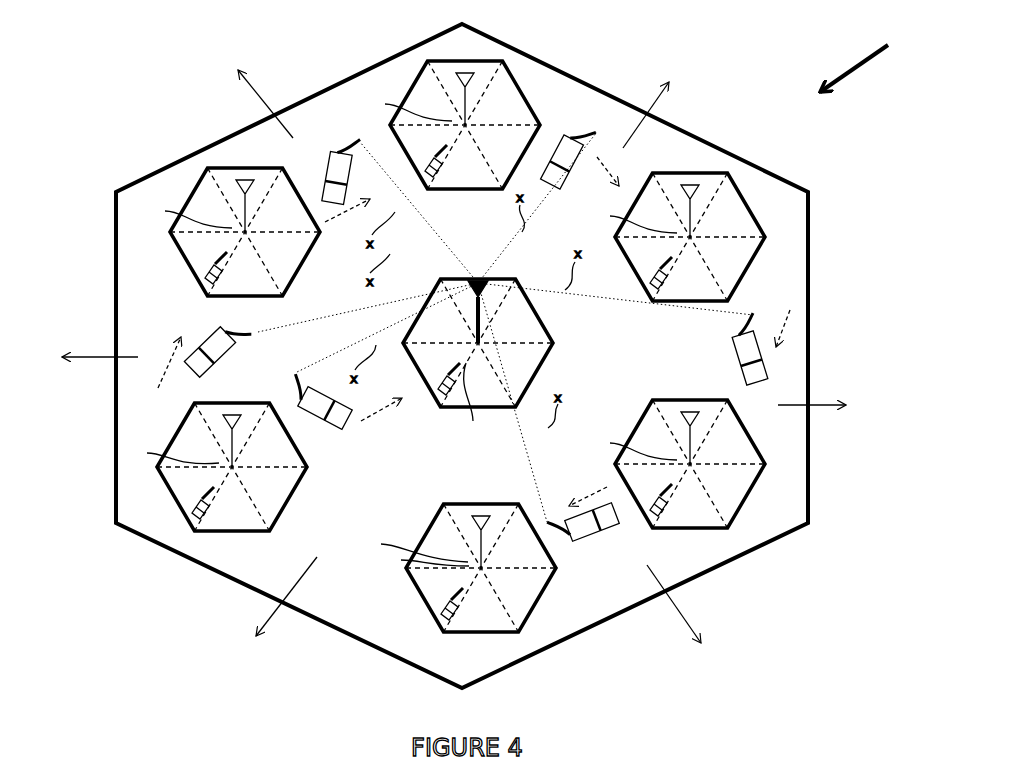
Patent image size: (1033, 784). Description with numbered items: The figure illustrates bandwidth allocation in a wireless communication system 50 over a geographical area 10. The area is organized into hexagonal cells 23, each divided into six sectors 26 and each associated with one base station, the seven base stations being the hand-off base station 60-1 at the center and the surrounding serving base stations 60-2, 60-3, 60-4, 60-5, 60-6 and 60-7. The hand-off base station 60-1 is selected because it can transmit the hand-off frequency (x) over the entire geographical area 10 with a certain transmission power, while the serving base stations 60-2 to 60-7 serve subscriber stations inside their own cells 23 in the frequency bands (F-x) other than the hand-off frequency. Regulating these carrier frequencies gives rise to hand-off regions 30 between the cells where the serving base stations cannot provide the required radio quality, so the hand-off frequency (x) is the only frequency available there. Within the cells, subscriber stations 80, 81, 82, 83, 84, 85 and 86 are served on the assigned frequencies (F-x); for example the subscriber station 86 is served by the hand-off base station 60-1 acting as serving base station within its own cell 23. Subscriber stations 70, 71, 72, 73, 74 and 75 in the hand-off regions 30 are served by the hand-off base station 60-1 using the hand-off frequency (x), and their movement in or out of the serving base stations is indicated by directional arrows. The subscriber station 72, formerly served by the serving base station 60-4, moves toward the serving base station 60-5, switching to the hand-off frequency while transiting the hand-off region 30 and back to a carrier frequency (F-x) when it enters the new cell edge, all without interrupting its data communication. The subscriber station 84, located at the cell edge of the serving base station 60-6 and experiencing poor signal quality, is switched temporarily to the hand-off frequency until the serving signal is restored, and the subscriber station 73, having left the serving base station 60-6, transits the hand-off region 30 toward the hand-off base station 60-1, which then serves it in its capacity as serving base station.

The geographical area 10 is at (808, 253).
The cell 23 is at (412, 73).
The sector 26 is at (442, 330).
The hand-off region 30 is at (452, 358).
The wireless communication system 50 is at (837, 78).
The hand-off base station 60-1 is at (459, 337).
The serving base station 60-2 is at (441, 109).
The serving base station 60-3 is at (662, 221).
The serving base station 60-4 is at (662, 448).
The serving base station 60-5 is at (450, 552).
The serving base station 60-6 is at (216, 468).
The serving base station 60-7 is at (220, 216).
The subscriber station 70 is at (572, 128).
The subscriber station 71 is at (768, 372).
The subscriber station 72 is at (592, 538).
The subscriber station 73 is at (340, 425).
The subscriber station 74 is at (200, 342).
The subscriber station 75 is at (328, 150).
The subscriber station 80 is at (395, 141).
The subscriber station 81 is at (616, 256).
The subscriber station 82 is at (616, 477).
The subscriber station 83 is at (403, 604).
The subscriber station 84 is at (233, 526).
The subscriber station 85 is at (173, 255).
The subscriber station 86 is at (413, 401).